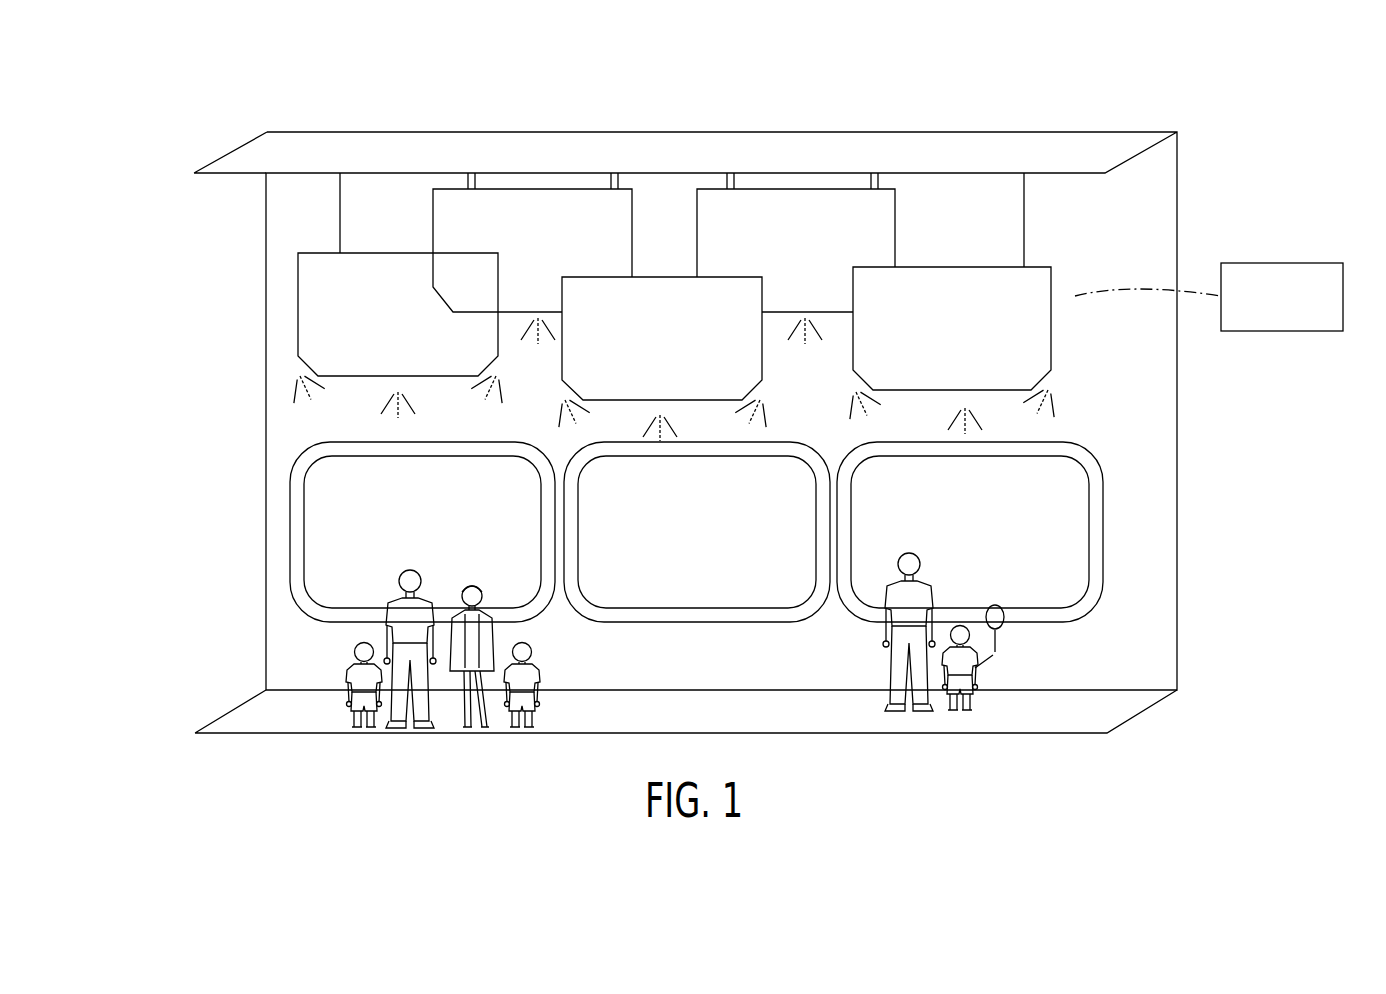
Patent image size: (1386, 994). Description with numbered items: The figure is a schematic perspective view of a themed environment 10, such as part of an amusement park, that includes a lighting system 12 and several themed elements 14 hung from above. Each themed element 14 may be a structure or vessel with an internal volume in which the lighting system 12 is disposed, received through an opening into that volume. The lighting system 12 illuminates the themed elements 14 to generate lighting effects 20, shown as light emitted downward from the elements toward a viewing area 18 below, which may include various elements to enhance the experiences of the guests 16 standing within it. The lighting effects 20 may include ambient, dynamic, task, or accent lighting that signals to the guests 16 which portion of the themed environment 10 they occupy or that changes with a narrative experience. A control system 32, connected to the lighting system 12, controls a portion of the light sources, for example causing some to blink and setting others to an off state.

The themed environment 10 is at (92, 115).
The lighting system 12 is at (282, 332).
The themed element 14 is at (1078, 283).
The guests 16 is at (338, 655).
The viewing area 18 is at (1118, 548).
The lighting effects 20 is at (1088, 413).
The control system 32 is at (1283, 263).